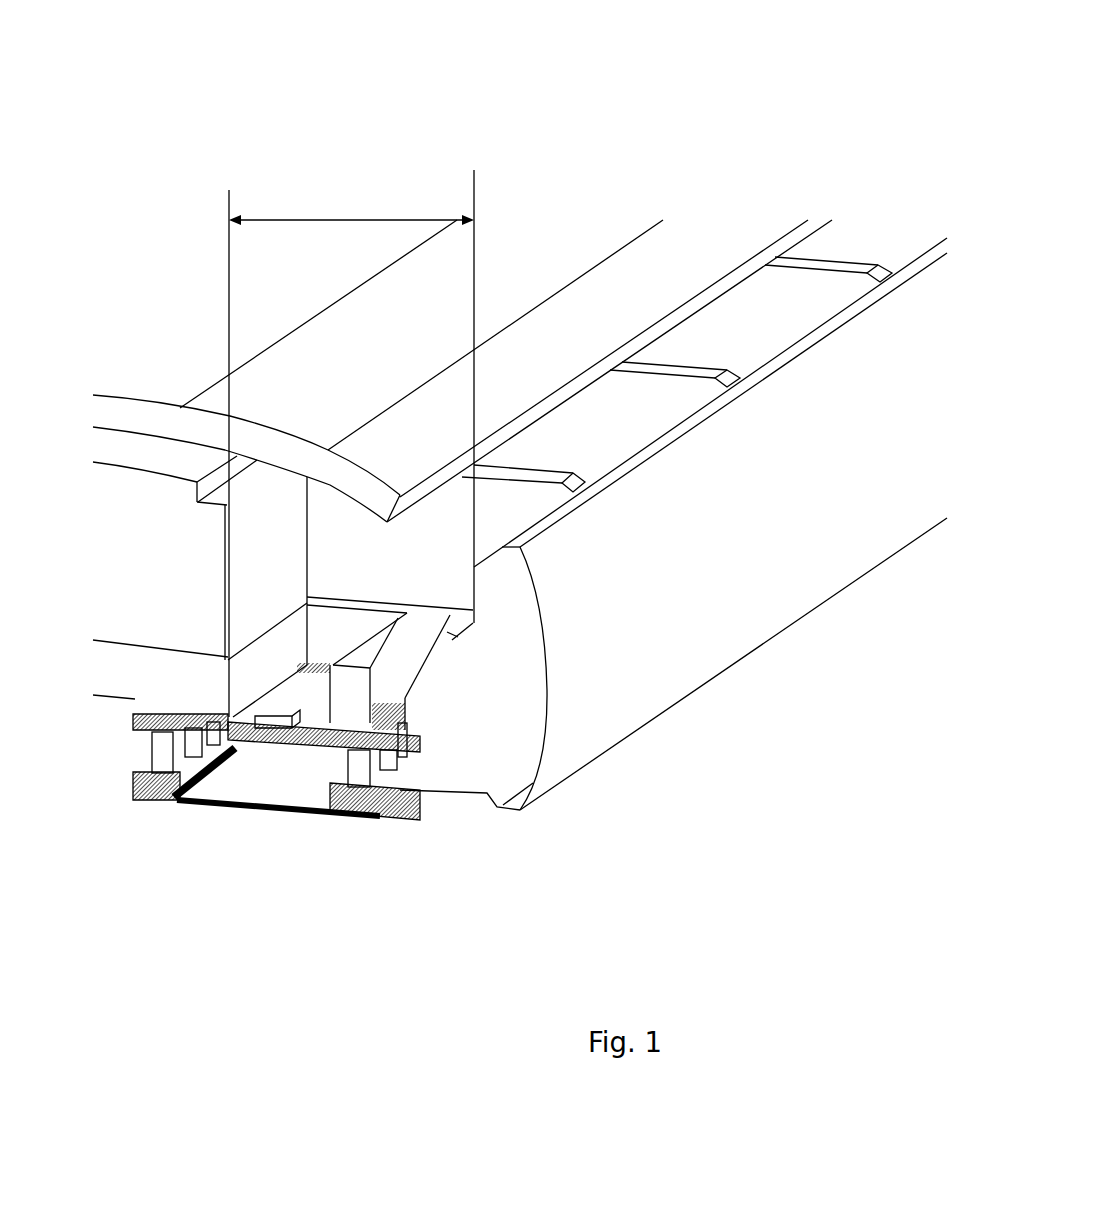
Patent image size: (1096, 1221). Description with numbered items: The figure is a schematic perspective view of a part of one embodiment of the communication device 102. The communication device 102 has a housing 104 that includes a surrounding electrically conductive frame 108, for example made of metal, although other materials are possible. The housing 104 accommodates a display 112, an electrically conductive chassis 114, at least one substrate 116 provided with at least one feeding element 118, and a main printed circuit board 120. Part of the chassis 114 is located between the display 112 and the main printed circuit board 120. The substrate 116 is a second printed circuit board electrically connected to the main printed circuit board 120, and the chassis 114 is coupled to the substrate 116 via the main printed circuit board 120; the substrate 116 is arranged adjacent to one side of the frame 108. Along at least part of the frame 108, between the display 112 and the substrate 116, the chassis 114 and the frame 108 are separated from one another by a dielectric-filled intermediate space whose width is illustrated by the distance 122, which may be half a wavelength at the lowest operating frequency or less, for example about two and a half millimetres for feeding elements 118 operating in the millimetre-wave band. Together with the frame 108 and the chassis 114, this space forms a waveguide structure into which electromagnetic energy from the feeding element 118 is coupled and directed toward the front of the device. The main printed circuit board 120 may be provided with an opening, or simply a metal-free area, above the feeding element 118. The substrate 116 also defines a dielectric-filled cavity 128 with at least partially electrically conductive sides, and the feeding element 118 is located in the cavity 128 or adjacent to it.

The communication device 102 is at (594, 152).
The housing 104 is at (712, 687).
The electrically conductive frame 108 is at (655, 682).
The display 112 is at (158, 418).
The electrically conductive chassis 114 is at (110, 503).
The substrate 116 is at (150, 797).
The feeding element 118 is at (278, 690).
The main printed circuit board 120 is at (110, 675).
The distance 122 is at (341, 218).
The dielectric-filled cavity 128 is at (267, 767).